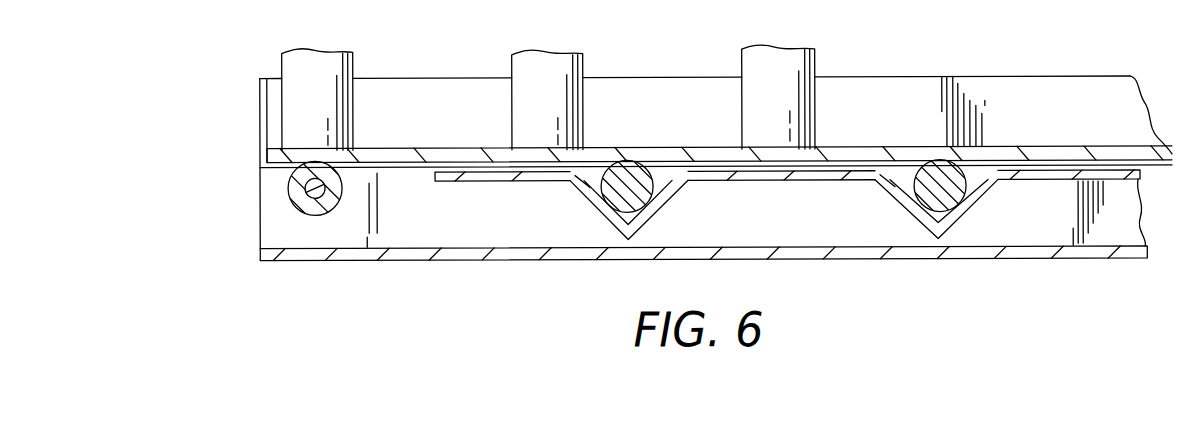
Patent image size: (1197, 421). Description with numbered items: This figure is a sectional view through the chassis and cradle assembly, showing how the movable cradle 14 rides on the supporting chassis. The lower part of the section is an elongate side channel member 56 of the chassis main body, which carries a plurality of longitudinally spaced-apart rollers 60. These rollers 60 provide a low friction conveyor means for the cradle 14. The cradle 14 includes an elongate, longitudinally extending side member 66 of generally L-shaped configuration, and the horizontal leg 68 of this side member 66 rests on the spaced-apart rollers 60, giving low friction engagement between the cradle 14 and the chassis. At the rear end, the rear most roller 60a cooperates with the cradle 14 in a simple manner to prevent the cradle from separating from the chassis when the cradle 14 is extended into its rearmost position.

The cradle 14 is at (1073, 76).
The side channel member 56 is at (1015, 259).
The rollers 60 is at (618, 203).
The rear most roller 60a is at (300, 203).
The side member 66 is at (1148, 111).
The horizontal leg 68 is at (412, 158).